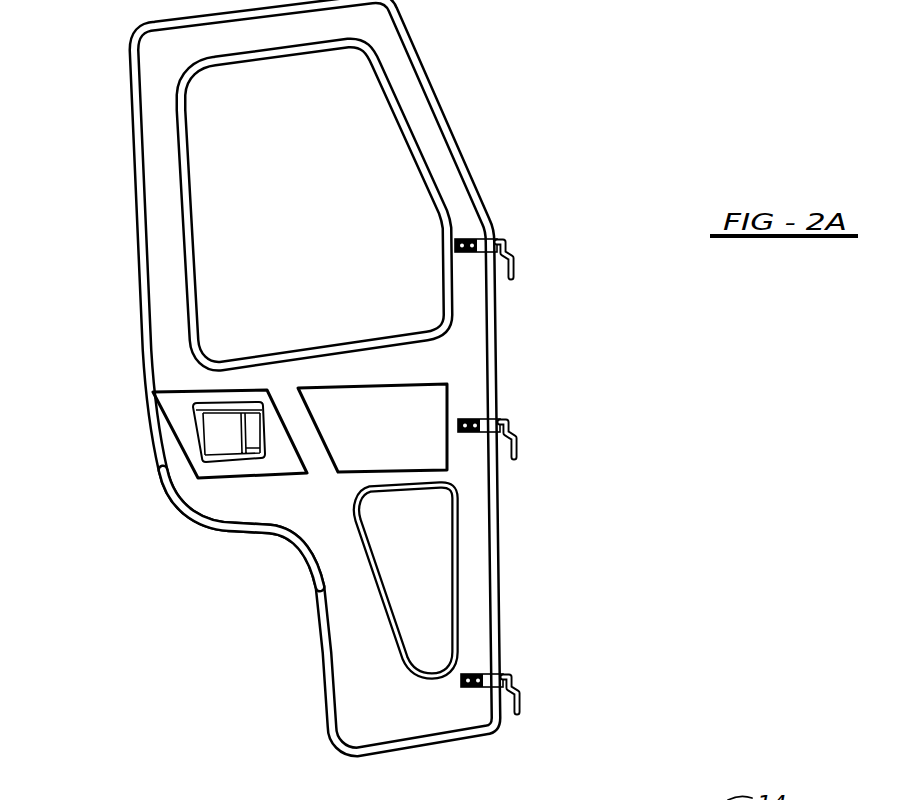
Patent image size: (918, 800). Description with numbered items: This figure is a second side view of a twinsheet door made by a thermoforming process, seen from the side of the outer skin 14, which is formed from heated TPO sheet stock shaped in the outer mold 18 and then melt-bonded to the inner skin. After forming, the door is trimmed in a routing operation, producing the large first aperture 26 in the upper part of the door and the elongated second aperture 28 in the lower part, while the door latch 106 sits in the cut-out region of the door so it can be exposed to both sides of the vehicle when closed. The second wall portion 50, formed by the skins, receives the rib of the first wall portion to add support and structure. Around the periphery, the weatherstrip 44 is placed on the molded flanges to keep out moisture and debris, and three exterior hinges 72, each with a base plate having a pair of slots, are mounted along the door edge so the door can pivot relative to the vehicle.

The outer skin 14 is at (420, 97).
The first aperture 26 is at (263, 62).
The second aperture 28 is at (424, 610).
The weatherstrip 44 is at (306, 547).
The second wall portion 50 is at (383, 427).
The exterior hinge 72 is at (514, 236).
The door latch 106 is at (221, 438).
The outer mold 18 is at (568, 799).